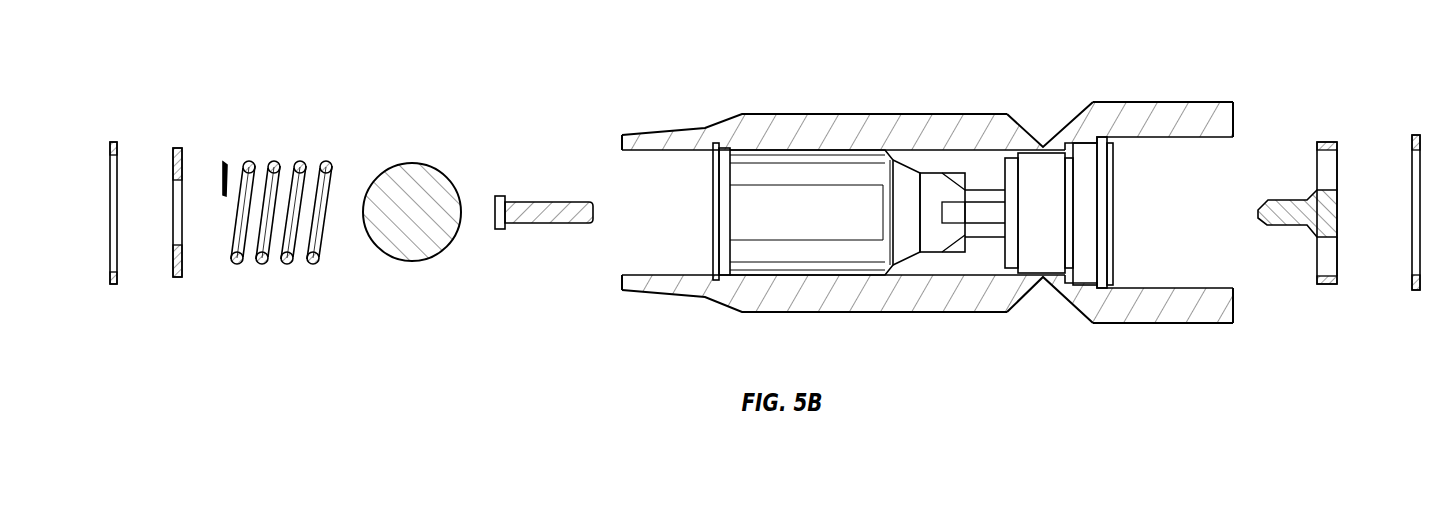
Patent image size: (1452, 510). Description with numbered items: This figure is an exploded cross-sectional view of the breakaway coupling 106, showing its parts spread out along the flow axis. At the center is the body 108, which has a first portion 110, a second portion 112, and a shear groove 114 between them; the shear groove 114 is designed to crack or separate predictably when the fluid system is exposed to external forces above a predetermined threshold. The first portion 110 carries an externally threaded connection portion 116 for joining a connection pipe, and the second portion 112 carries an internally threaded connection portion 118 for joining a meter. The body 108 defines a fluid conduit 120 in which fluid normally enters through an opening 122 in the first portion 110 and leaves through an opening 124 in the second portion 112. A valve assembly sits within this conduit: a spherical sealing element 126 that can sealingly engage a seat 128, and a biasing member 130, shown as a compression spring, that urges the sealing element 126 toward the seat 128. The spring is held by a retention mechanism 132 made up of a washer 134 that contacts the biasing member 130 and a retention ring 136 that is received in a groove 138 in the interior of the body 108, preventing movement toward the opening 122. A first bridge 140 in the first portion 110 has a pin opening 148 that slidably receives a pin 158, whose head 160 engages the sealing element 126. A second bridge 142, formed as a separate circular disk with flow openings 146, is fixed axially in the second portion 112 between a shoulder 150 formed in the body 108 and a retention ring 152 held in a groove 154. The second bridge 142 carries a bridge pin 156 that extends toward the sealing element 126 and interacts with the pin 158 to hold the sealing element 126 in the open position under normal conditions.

The breakaway coupling 106 is at (960, 40).
The body 108 is at (1000, 320).
The first portion 110 is at (836, 99).
The second portion 112 is at (1157, 99).
The shear groove 114 is at (1043, 142).
The connection portion 116 is at (668, 120).
The connection portion 118 is at (1240, 128).
The fluid conduit 120 is at (833, 233).
The opening 122 is at (626, 178).
The opening 124 is at (1214, 265).
The sealing element 126 is at (415, 262).
The seat 128 is at (907, 170).
The biasing member 130 is at (287, 265).
The retention mechanism 132 is at (138, 275).
The washer 134 is at (165, 247).
The retention ring 136 is at (113, 285).
The groove 138 is at (716, 281).
The first bridge 140 is at (985, 182).
The second bridge 142 is at (1342, 229).
The flow openings 146 is at (1336, 252).
The pin opening 148 is at (974, 216).
The shoulder 150 is at (1080, 286).
The retention ring 152 is at (1417, 291).
The groove 154 is at (1101, 290).
The bridge pin 156 is at (1278, 200).
The pin 158 is at (542, 211).
The head 160 is at (503, 199).